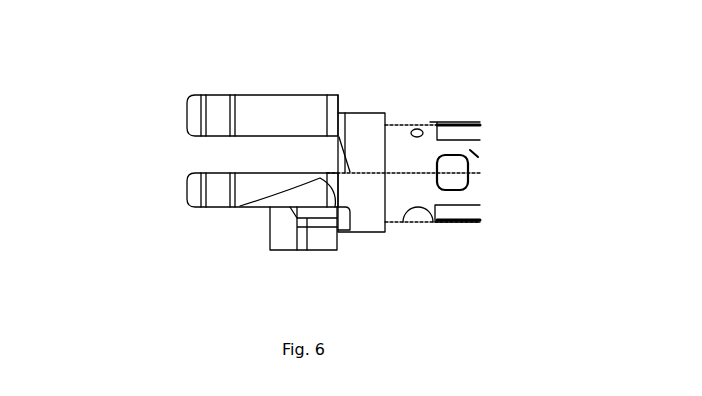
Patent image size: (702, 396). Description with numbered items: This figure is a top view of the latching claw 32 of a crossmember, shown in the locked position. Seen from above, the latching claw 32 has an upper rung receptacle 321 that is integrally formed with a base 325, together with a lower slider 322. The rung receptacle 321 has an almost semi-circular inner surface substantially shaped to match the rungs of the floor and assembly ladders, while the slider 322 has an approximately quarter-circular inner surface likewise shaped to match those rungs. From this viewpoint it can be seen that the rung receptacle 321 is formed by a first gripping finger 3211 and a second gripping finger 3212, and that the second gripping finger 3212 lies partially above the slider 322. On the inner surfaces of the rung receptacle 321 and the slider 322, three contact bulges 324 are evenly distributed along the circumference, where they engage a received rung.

The latching claw 32 is at (163, 149).
The rung receptacle 321 is at (274, 80).
The first gripping finger 3211 is at (207, 113).
The second gripping finger 3212 is at (197, 190).
The slider 322 is at (278, 232).
The contact bulge 324 is at (297, 250).
The base 325 is at (466, 153).